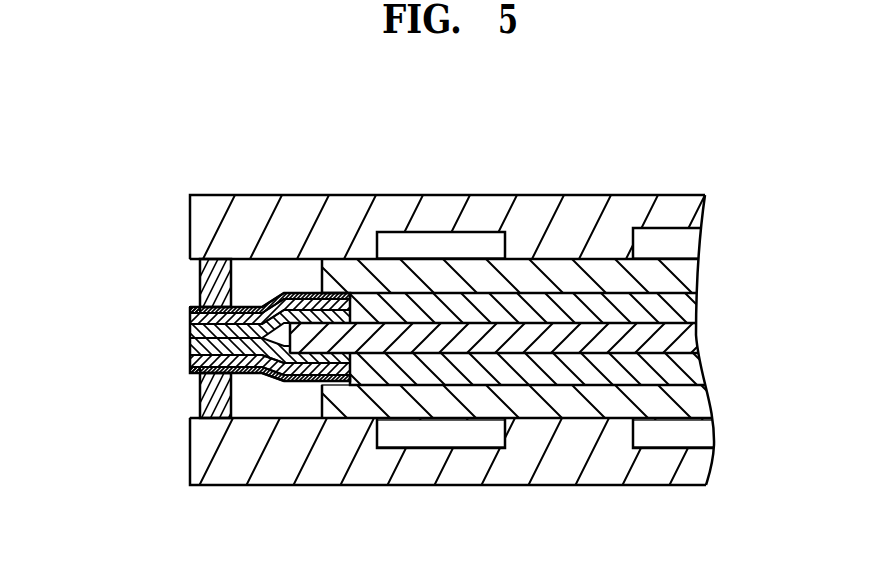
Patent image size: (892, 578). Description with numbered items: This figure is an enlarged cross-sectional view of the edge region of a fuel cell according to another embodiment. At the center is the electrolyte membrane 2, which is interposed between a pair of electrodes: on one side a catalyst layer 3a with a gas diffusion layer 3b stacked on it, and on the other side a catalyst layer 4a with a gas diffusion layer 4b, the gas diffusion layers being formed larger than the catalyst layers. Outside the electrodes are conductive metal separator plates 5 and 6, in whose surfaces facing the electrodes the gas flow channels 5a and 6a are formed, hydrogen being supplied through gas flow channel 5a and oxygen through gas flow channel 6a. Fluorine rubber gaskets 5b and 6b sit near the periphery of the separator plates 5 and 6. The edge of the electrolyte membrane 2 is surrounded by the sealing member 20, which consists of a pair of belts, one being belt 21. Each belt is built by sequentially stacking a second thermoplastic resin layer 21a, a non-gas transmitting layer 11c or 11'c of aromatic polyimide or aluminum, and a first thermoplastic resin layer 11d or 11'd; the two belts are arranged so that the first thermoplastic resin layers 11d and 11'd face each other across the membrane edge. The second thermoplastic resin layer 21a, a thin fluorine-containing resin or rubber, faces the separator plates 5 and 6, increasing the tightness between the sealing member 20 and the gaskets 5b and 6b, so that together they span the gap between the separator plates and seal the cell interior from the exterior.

The electrolyte membrane 2 is at (686, 343).
The catalyst layer 3a is at (688, 312).
The gas diffusion layer 3b is at (686, 278).
The catalyst layer 4a is at (690, 371).
The gas diffusion layer 4b is at (697, 402).
The separator plate 5 is at (690, 215).
The gas flow channel 5a is at (647, 237).
The gasket 5b is at (200, 266).
The separator plate 6 is at (697, 465).
The gas flow channel 6a is at (650, 440).
The gasket 6b is at (200, 414).
The non-gas transmitting layer 11c is at (190, 317).
The first thermoplastic resin layer 11d is at (190, 331).
The first thermoplastic resin layer 11'd is at (201, 357).
The non-gas transmitting layer 11'c is at (207, 381).
The sealing member 20 is at (293, 291).
The belt 21 is at (245, 297).
The second thermoplastic resin layer 21a is at (191, 306).